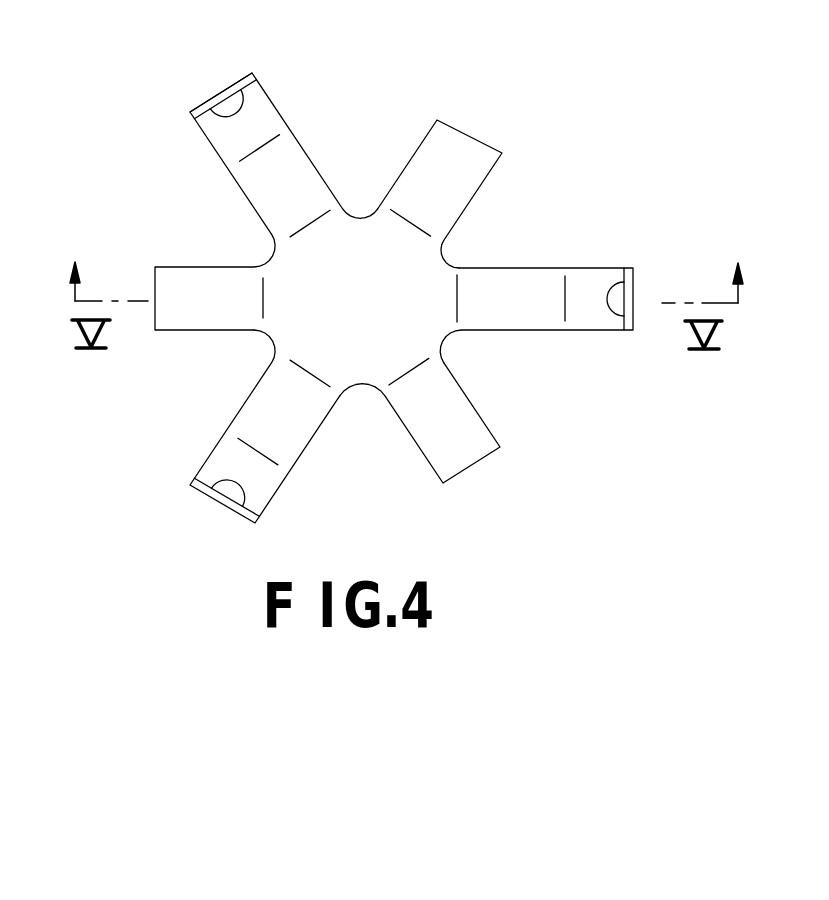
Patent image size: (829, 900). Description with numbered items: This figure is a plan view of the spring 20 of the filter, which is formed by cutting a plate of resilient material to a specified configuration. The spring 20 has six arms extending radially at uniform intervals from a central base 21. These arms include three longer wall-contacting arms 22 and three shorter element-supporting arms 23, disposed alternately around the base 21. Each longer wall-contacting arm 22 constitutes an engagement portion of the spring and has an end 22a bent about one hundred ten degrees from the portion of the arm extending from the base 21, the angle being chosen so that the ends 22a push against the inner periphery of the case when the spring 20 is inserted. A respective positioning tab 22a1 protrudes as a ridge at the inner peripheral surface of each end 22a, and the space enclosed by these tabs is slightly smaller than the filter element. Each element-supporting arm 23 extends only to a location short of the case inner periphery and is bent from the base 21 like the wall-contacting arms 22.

The spring 20 is at (502, 98).
The base 21 is at (427, 277).
The wall-contacting arm 22 is at (302, 166).
The end 22a is at (256, 70).
The positioning tab 22a1 is at (232, 117).
The element-supporting arm 23 is at (497, 141).